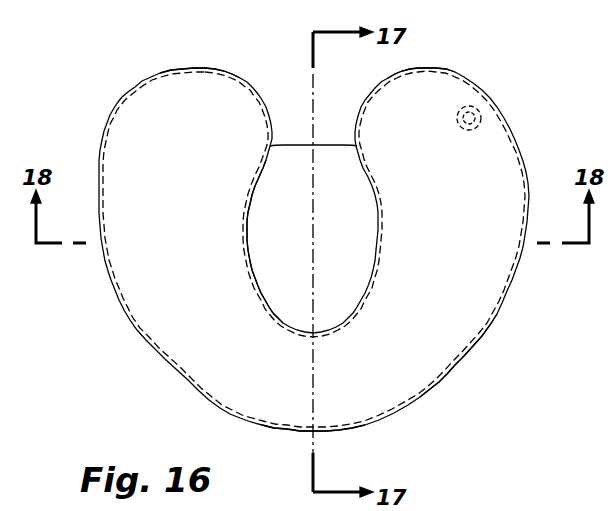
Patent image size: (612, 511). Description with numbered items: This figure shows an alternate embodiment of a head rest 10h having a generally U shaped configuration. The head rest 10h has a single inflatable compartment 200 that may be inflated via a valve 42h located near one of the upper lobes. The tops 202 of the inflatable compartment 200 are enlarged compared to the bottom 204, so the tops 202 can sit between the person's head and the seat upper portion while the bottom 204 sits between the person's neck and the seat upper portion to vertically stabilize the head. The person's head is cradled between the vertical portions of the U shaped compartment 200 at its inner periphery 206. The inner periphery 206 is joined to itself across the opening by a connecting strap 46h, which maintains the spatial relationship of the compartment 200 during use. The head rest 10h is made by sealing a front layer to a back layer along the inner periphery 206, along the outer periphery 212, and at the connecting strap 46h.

The head rest 10h is at (516, 52).
The inflatable compartment 200 is at (474, 157).
The tops 202 is at (195, 81).
The valve 42h is at (478, 113).
The inner periphery 206 is at (247, 252).
The connecting strap 46h is at (280, 283).
The bottom 204 is at (333, 386).
The outer periphery 212 is at (454, 365).